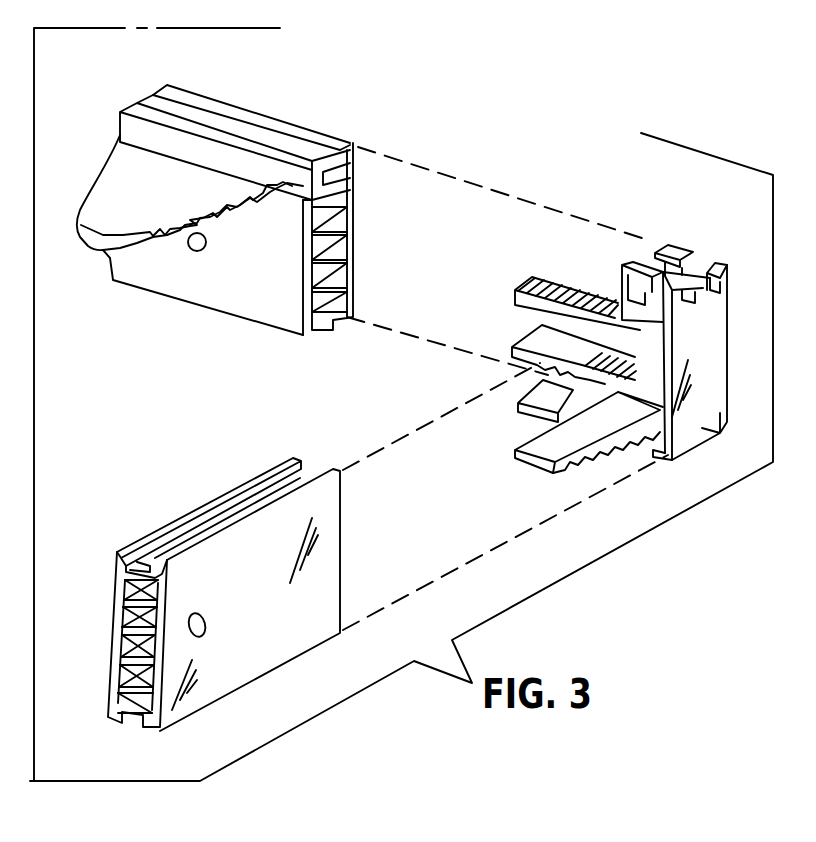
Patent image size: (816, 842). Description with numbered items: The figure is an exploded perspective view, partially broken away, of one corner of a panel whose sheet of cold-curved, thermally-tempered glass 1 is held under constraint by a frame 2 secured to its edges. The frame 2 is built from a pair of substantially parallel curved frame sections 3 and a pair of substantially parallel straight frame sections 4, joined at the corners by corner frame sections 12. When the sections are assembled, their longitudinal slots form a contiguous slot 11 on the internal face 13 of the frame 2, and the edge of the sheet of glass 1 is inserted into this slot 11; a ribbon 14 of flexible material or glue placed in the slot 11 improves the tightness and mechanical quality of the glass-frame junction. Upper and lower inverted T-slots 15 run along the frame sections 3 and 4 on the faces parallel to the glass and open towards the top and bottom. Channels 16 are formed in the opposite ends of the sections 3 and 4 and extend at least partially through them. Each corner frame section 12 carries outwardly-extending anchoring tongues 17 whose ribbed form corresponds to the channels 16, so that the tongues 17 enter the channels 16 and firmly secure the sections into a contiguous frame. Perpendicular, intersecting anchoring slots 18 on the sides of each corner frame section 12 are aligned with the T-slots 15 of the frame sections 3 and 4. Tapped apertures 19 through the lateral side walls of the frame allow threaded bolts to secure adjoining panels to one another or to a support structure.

The sheet of glass 1 is at (123, 218).
The frame 2 is at (330, 118).
The curved frame section 3 is at (352, 228).
The straight frame section 4 is at (305, 640).
The contiguous slot 11 is at (293, 203).
The corner frame section 12 is at (680, 223).
The internal face 13 is at (238, 307).
The ribbon 14 is at (345, 172).
The inverted T-slot 15 is at (237, 127).
The channel 16 is at (350, 270).
The anchoring tongue 17 is at (557, 441).
The anchoring slot 18 is at (703, 263).
The tapped aperture 19 is at (209, 621).